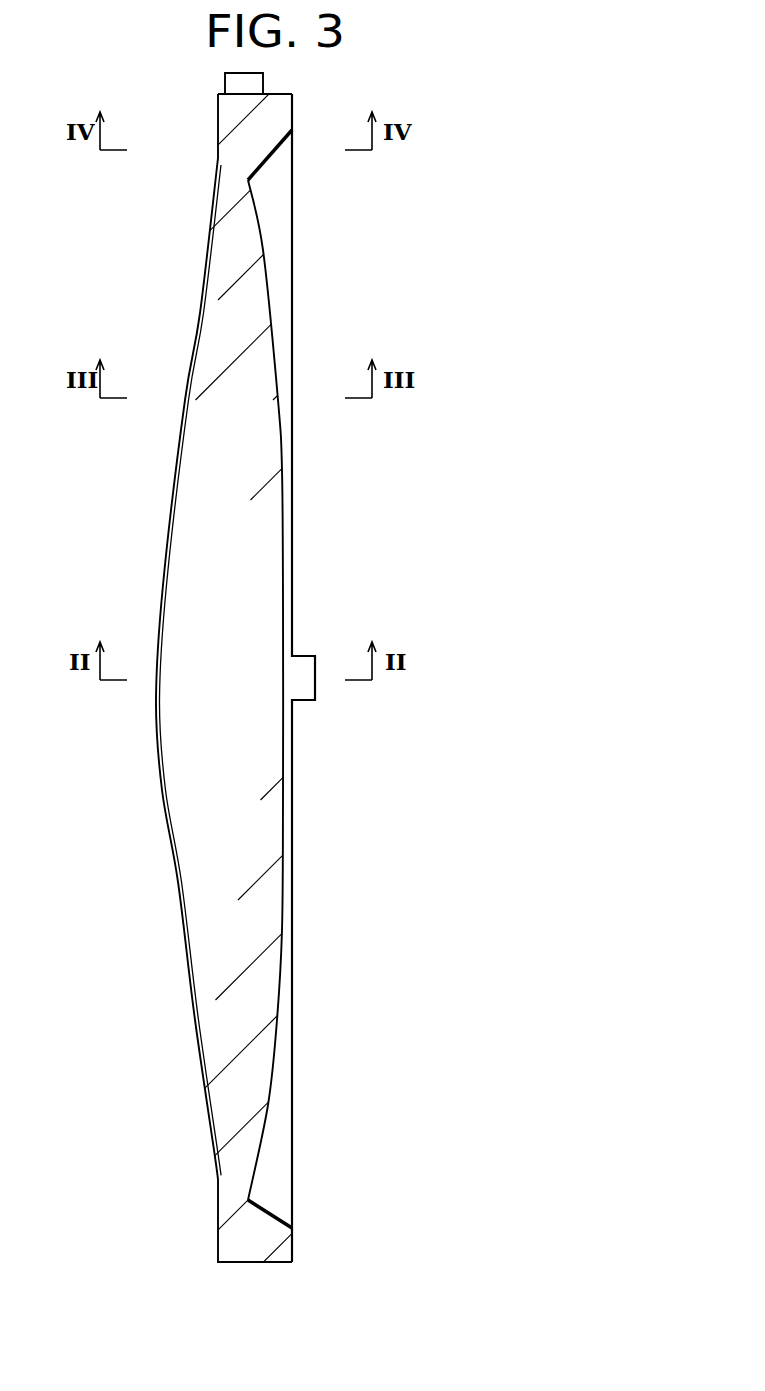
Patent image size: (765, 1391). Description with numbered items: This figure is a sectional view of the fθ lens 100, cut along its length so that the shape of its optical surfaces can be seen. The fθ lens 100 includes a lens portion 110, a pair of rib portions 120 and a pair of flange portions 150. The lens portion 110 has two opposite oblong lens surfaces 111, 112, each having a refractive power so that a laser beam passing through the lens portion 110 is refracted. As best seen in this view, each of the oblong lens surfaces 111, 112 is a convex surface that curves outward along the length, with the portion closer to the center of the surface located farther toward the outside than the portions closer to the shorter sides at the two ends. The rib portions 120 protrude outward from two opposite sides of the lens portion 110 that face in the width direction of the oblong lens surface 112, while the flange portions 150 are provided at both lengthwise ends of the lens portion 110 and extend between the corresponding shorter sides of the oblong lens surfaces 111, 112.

The fθ lens 100 is at (520, 170).
The lens portion 110 is at (217, 968).
The oblong lens surface 111 is at (160, 781).
The oblong lens surface 112 is at (283, 817).
The rib portion 120 is at (282, 1148).
The flange portion 150 is at (278, 108).